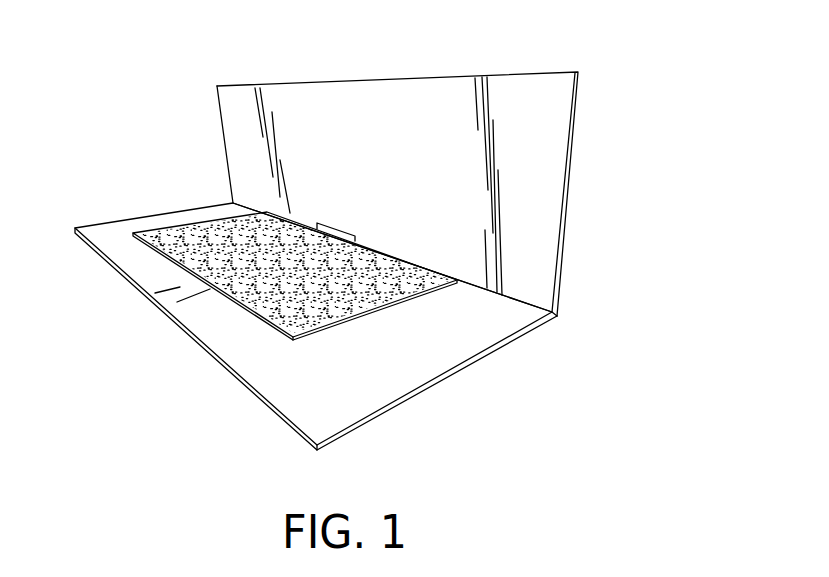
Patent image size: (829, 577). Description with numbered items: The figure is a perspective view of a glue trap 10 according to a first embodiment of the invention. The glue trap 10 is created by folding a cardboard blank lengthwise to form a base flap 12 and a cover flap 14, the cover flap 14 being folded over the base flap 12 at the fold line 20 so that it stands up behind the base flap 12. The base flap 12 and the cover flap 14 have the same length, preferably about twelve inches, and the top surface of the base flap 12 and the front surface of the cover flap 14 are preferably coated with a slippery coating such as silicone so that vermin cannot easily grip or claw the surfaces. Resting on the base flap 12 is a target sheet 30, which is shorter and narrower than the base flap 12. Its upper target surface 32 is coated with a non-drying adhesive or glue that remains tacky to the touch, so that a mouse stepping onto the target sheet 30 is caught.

The glue trap 10 is at (593, 195).
The base flap 12 is at (283, 398).
The cover flap 14 is at (553, 133).
The fold line 20 is at (528, 300).
The target sheet 30 is at (150, 253).
The target surface 32 is at (177, 237).